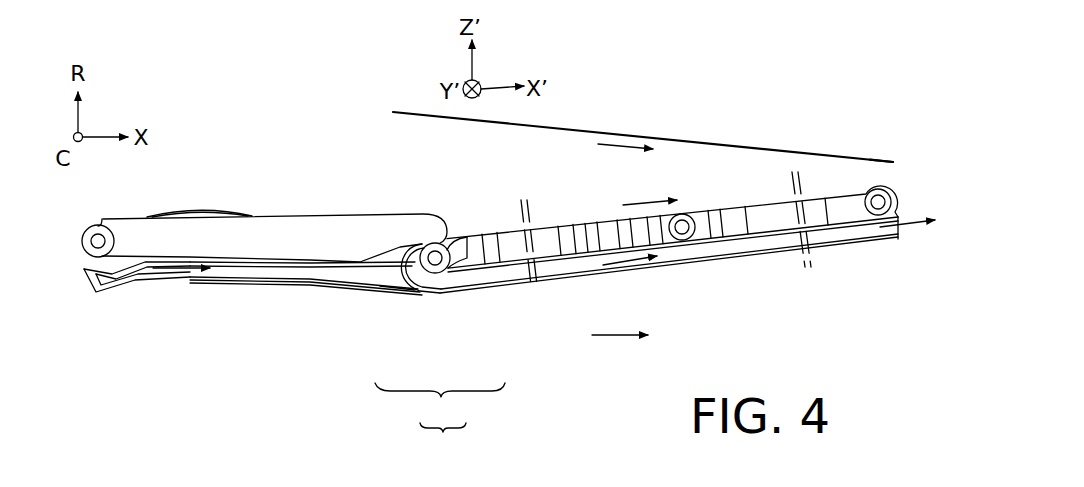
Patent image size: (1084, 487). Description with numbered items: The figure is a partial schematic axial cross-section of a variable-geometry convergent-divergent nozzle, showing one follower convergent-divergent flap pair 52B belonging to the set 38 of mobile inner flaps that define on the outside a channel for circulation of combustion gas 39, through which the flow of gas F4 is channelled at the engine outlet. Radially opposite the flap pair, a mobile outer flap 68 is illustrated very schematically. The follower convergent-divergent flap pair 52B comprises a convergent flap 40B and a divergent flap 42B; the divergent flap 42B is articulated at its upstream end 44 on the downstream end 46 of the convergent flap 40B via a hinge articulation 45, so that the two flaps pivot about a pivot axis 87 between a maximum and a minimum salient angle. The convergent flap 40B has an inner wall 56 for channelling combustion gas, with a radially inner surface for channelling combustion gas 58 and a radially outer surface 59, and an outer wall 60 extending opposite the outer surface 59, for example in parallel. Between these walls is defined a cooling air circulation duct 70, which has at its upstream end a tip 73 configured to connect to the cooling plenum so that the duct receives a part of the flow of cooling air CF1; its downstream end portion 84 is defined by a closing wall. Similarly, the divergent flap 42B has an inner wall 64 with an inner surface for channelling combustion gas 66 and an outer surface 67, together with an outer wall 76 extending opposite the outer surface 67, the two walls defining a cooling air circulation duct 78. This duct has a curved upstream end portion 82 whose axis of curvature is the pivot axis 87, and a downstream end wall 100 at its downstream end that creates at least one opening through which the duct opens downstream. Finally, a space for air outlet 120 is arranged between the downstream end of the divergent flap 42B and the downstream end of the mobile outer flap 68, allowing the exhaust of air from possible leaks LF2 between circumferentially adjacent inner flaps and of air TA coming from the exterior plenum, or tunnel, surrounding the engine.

The set of mobile inner flaps 38 is at (443, 442).
The channel for circulation of combustion gas 39 is at (866, 362).
The convergent flap 40B is at (502, 262).
The divergent flap 42B is at (689, 263).
The upstream end 44 is at (458, 235).
The hinge articulation 45 is at (434, 243).
The downstream end 46 is at (427, 212).
The follower convergent-divergent flap pair 52B is at (440, 404).
The inner wall 56 is at (140, 283).
The inner surface for channelling combustion gas 58 is at (265, 285).
The outer surface 59 is at (287, 278).
The outer wall 60 is at (251, 262).
The inner wall 64 is at (770, 252).
The inner surface for channelling combustion gas 66 is at (860, 245).
The outer surface 67 is at (843, 228).
The mobile outer flap 68 is at (581, 128).
The cooling air circulation duct 70 is at (147, 262).
The tip 73 is at (95, 267).
The outer wall 76 is at (750, 212).
The cooling air circulation duct 78 is at (742, 250).
The curved upstream end portion 82 is at (423, 287).
The downstream end portion 84 is at (398, 280).
The pivot axis 87 is at (445, 252).
The downstream end wall 100 is at (912, 230).
The space for air outlet 120 is at (886, 172).
The flow of cooling air CF1 is at (182, 270).
The leaks LF2 is at (655, 198).
The air coming from an exterior plenum TA is at (618, 147).
The flow of gas F4 is at (620, 338).